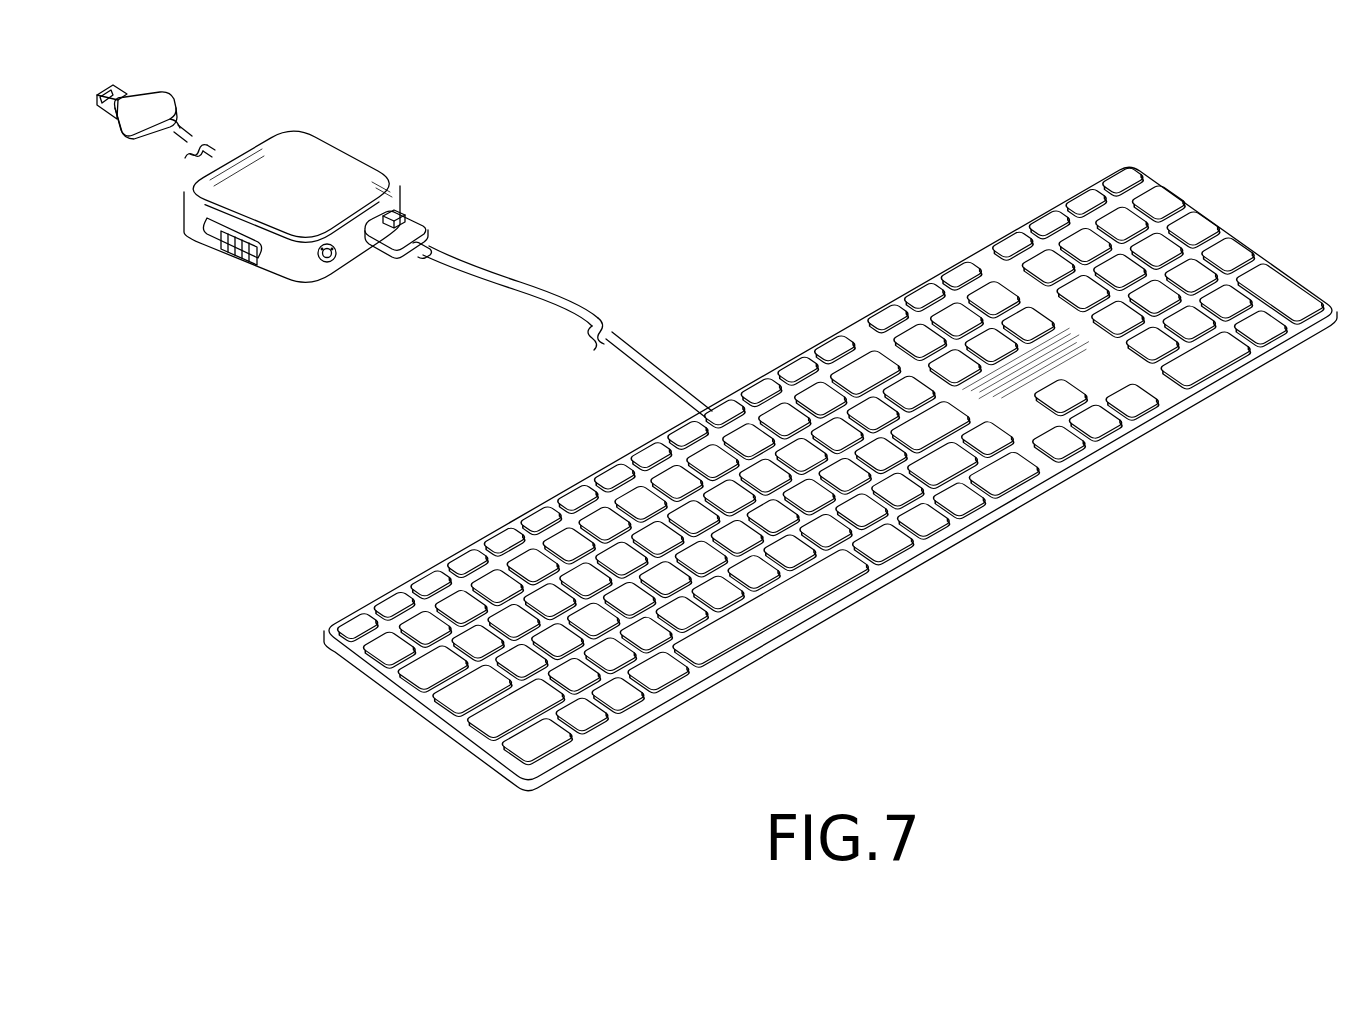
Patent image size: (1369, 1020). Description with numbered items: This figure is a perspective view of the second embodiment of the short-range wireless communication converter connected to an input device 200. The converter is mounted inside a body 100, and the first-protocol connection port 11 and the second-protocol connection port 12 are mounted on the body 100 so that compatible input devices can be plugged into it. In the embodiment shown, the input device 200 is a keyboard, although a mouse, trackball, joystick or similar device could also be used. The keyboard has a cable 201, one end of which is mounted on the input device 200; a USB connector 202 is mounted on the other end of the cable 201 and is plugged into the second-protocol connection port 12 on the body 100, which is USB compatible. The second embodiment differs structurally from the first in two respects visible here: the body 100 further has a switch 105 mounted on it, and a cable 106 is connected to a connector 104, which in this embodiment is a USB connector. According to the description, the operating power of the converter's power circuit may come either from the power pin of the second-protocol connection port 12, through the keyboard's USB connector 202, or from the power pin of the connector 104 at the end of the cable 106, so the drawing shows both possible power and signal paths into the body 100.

The input device 200 is at (1058, 488).
The cable 201 is at (560, 296).
The USB connector 202 is at (432, 232).
The body 100 is at (346, 160).
The switch 105 is at (228, 246).
The first-protocol connection port 11 is at (343, 263).
The second-protocol connection port 12 is at (398, 214).
The cable 106 is at (222, 148).
The connector 104 is at (152, 105).